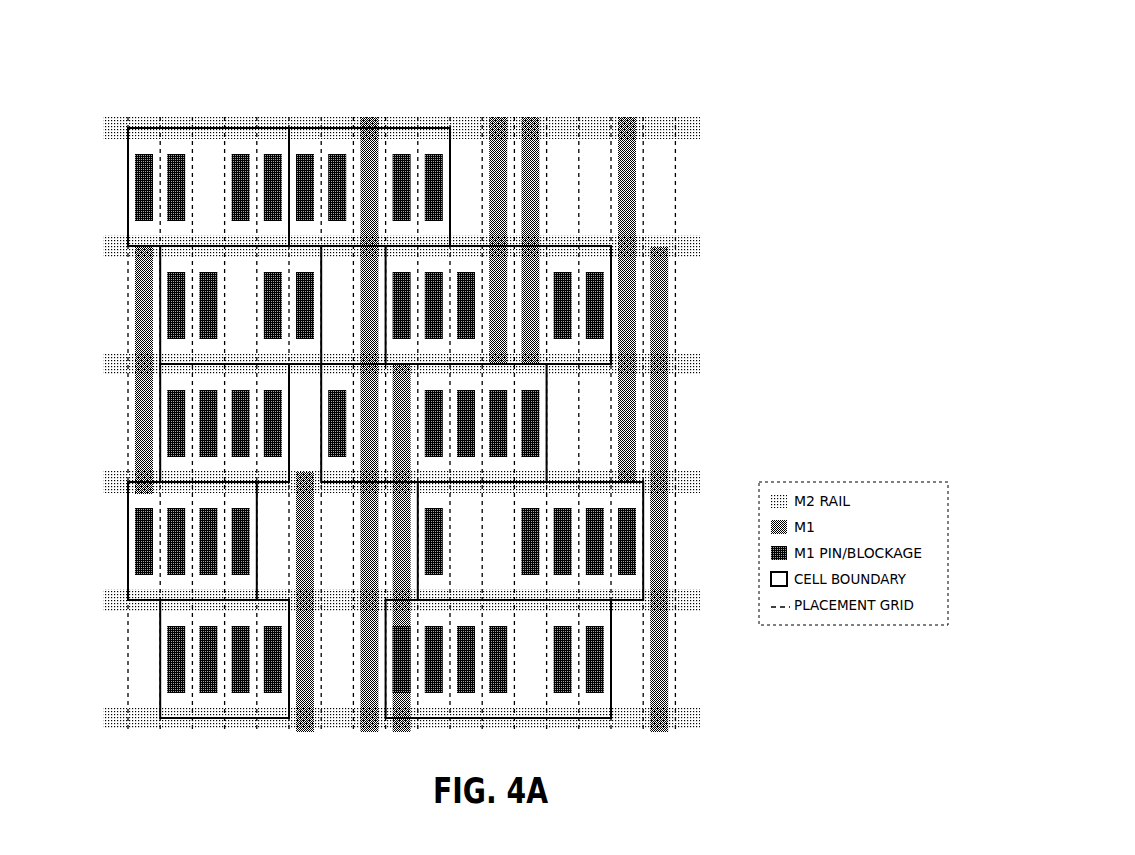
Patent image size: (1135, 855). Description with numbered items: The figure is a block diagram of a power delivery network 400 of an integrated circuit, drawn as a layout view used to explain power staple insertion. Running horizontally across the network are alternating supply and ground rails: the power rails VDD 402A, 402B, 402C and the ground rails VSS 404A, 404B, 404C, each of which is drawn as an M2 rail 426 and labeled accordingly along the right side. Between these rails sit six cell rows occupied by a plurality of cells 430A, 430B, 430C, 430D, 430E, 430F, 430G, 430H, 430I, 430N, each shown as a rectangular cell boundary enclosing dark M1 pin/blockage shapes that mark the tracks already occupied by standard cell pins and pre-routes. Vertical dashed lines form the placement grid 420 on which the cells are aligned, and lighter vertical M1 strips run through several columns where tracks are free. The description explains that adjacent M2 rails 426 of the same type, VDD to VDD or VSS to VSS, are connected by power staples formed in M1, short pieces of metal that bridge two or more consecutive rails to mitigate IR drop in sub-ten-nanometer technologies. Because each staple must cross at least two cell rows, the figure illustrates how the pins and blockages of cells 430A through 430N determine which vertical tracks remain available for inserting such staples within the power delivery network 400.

The power delivery network 400 is at (60, 73).
The power (VDD) 402A is at (88, 125).
The power (VDD) 402B is at (88, 361).
The power (VDD) 402C is at (88, 597).
The ground (VSS) 404A is at (88, 243).
The ground (VSS) 404B is at (88, 479).
The ground (VSS) 404C is at (88, 715).
The placement grid 420 is at (672, 290).
The M2 rail 426 is at (402, 414).
The cell 430A is at (235, 127).
The cell 430B is at (402, 127).
The cell 430C is at (160, 281).
The cell 430D is at (568, 247).
The cell 430E is at (160, 392).
The cell 430F is at (548, 378).
The cell 430G is at (128, 521).
The cell 430H is at (592, 483).
The cell 430I is at (160, 632).
The cell 430N is at (467, 598).